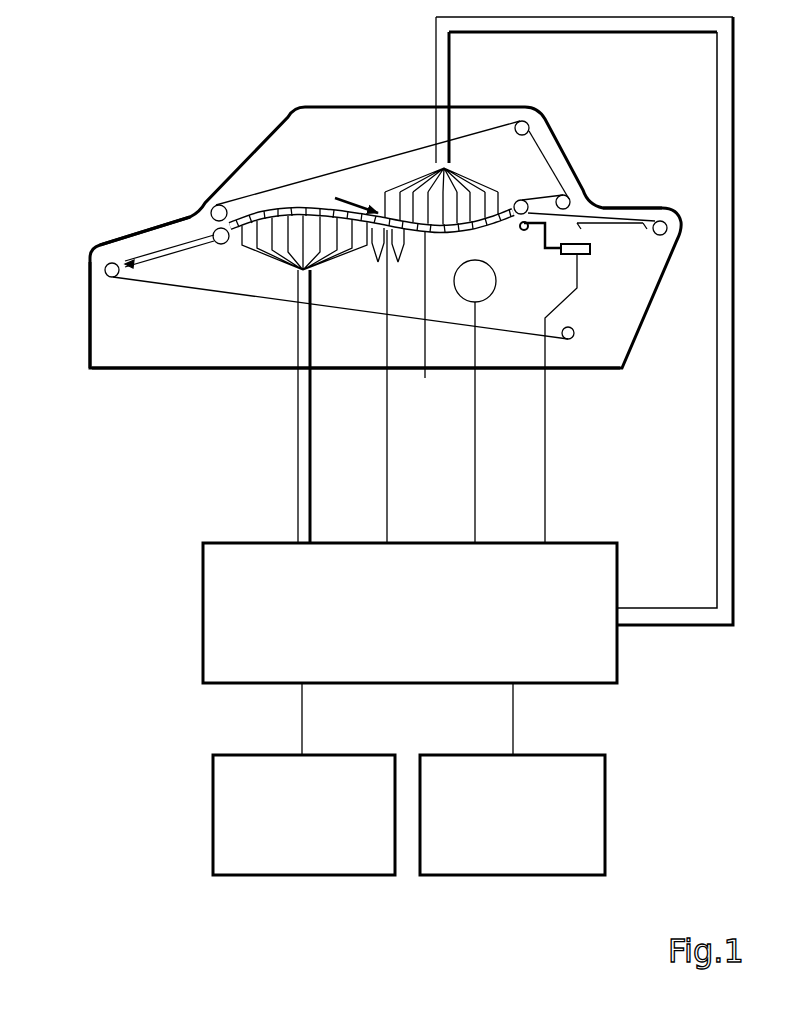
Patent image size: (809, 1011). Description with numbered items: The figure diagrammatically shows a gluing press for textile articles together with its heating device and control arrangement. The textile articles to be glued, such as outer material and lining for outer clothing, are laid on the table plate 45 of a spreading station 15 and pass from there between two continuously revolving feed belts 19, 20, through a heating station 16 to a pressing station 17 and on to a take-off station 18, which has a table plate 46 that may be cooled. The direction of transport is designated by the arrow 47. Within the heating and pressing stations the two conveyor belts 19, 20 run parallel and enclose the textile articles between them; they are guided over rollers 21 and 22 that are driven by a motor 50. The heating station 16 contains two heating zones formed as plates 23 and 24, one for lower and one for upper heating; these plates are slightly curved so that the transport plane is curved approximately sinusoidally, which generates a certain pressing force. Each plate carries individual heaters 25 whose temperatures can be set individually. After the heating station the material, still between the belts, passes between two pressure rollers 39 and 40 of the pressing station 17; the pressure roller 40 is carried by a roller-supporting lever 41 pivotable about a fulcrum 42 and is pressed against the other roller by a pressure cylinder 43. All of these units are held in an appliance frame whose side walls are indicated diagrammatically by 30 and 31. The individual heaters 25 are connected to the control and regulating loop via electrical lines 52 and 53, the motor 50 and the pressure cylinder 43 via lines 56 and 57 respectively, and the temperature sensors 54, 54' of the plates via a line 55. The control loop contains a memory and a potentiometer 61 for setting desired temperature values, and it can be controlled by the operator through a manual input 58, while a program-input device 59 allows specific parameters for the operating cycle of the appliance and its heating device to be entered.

The spreading station 15 is at (165, 207).
The heating station 16 is at (333, 163).
The pressing station 17 is at (515, 186).
The take-off station 18 is at (630, 203).
The feed belt 19 is at (353, 165).
The feed belt 20 is at (133, 283).
The roller 21 is at (214, 205).
The roller 22 is at (111, 263).
The plate 23 is at (291, 204).
The plate 24 is at (450, 245).
The individual heater 25 is at (266, 222).
The side wall 30 is at (132, 357).
The side wall 31 is at (126, 353).
The pressure roller 39 is at (526, 203).
The pressure roller 40 is at (522, 223).
The roller-supporting lever 41 is at (543, 238).
The fulcrum 42 is at (542, 240).
The pressure cylinder 43 is at (585, 256).
The table plate 45 is at (160, 251).
The table plate 46 is at (612, 222).
The arrow 47 is at (370, 210).
The motor 50 is at (472, 302).
The electrical line 52 is at (298, 387).
The electrical line 53 is at (672, 615).
The temperature sensor 54 is at (372, 266).
The temperature sensor 54' is at (407, 267).
The line 55 is at (387, 392).
The line 56 is at (473, 392).
The line 57 is at (543, 393).
The manual input 58 is at (230, 789).
The program-input device 59 is at (580, 781).
The potentiometer 61 is at (233, 652).